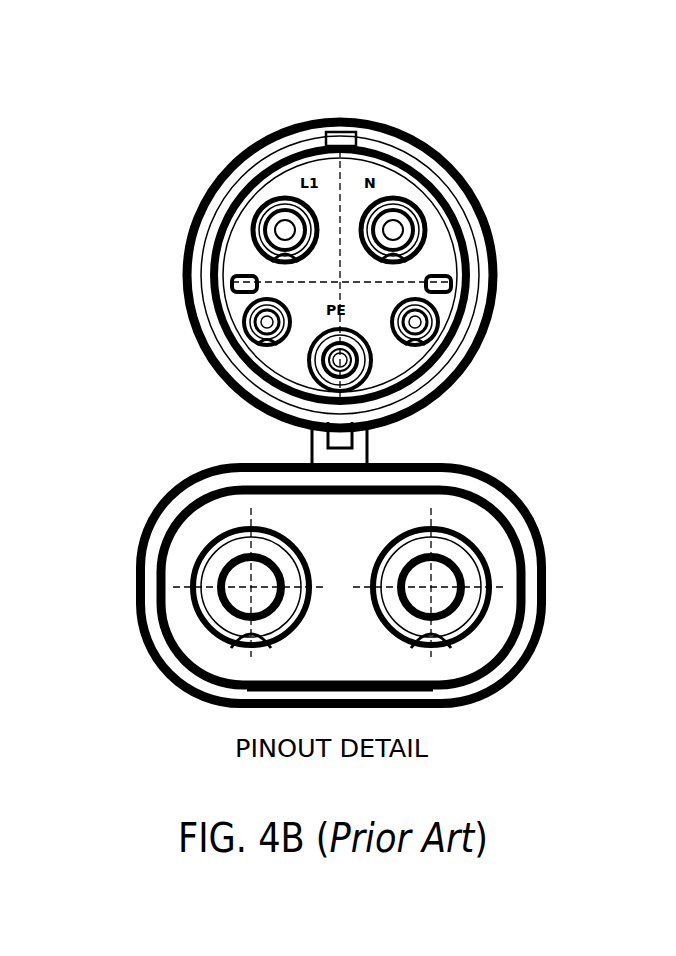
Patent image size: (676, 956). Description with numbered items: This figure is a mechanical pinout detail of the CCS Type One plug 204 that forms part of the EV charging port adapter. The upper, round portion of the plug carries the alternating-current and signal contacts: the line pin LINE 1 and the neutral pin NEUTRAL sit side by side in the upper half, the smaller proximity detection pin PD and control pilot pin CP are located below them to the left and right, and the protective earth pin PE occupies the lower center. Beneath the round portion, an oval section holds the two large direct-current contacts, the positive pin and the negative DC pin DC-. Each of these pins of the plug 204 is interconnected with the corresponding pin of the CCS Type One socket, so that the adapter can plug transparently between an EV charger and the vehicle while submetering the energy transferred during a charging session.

The CCS Type 1 plug 204 is at (312, 584).
The Line 1 (L1) pin LINE 1 is at (280, 203).
The neutral (N) pin NEUTRAL is at (428, 220).
The proximity detection (PD) pin PD is at (255, 326).
The control pilot (CP) pin CP is at (432, 327).
The protective earth (PE) pin PE is at (356, 364).
The negative DC (DC−) pin DC- is at (465, 547).